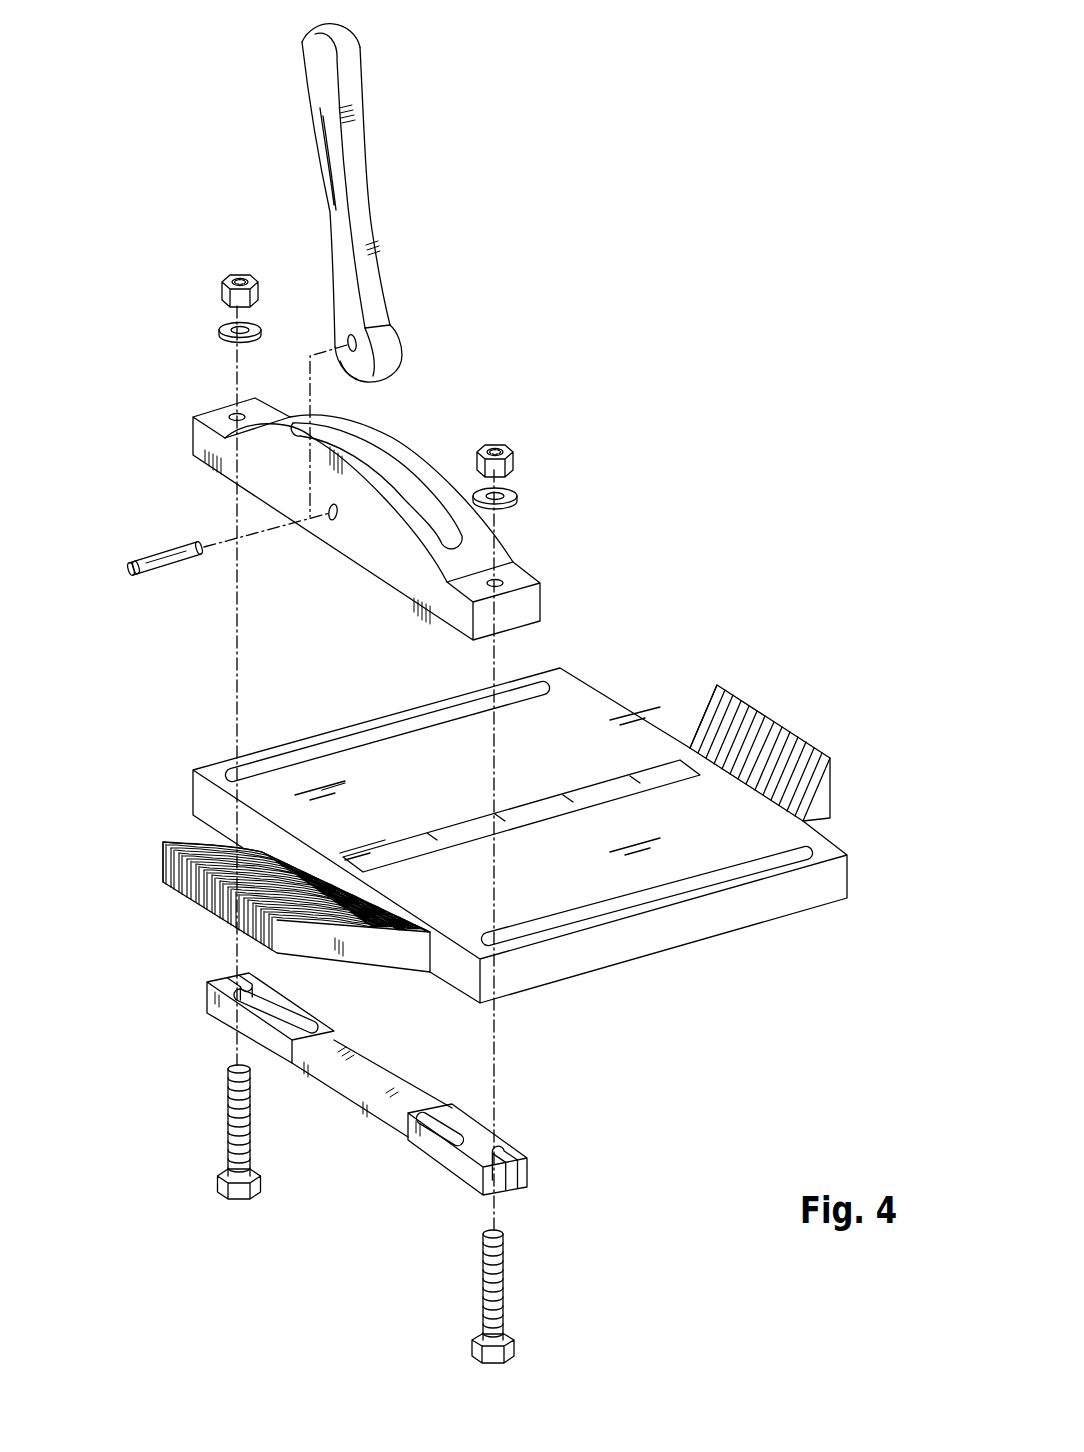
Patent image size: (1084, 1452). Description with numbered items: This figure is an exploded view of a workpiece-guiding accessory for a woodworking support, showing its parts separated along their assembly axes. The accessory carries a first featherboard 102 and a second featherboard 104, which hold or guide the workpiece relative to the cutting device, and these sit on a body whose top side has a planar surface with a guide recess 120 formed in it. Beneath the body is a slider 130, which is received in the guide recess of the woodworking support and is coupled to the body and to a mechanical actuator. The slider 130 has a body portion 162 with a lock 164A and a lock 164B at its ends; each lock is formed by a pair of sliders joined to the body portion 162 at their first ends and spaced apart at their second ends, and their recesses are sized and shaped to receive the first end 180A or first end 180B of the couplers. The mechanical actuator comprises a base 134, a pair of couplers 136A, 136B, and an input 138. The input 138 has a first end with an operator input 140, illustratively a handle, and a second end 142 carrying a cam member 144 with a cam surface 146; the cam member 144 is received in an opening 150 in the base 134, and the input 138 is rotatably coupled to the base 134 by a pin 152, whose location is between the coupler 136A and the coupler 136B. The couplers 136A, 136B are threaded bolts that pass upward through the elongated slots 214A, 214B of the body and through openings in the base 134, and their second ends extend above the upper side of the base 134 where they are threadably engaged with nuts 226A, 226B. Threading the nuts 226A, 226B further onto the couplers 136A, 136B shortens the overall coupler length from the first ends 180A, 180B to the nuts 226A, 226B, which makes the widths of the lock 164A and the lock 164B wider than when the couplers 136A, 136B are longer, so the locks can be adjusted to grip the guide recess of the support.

The first featherboard 102 is at (782, 712).
The second featherboard 104 is at (187, 912).
The guide recess 120 is at (576, 801).
The slider 130 is at (372, 1170).
The base 134 is at (366, 538).
The coupler 136A is at (578, 1288).
The coupler 136B is at (157, 1166).
The input 138 is at (368, 270).
The operator input 140 is at (306, 53).
The second end 142 is at (433, 333).
The cam member 144 is at (407, 377).
The cam surface 146 is at (387, 337).
The opening 150 is at (422, 497).
The pin 152 is at (152, 537).
The body portion 162 is at (372, 1095).
The lock 164A is at (540, 1145).
The lock 164B is at (197, 1030).
The first end 180A is at (520, 1343).
The first end 180B is at (220, 1195).
The elongated slot 214A is at (763, 857).
The elongated slot 214B is at (410, 725).
The nut 226A is at (522, 448).
The nut 226B is at (212, 278).